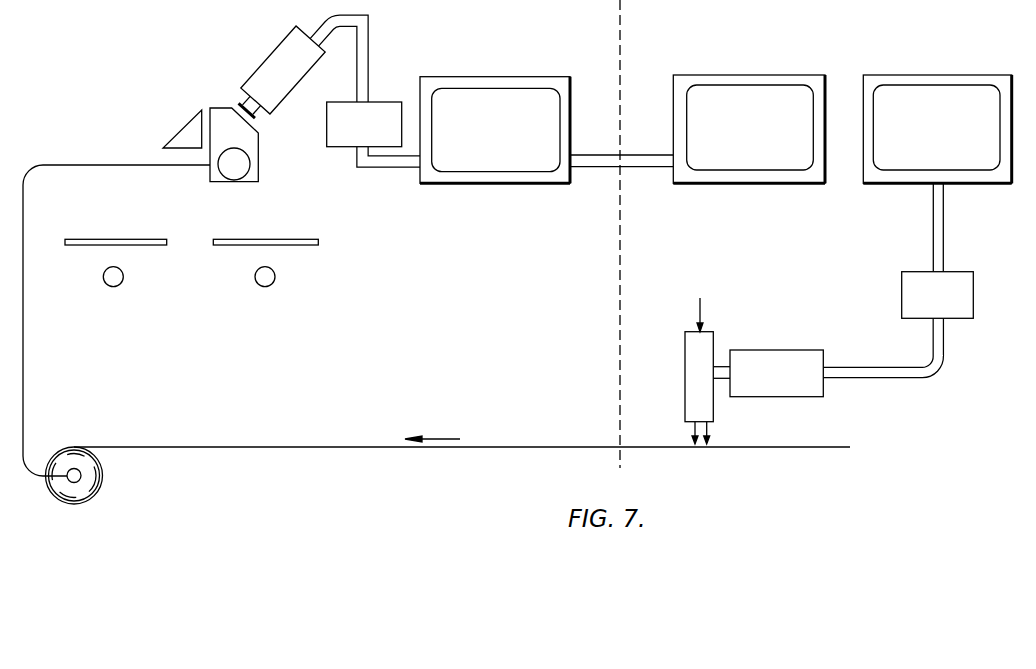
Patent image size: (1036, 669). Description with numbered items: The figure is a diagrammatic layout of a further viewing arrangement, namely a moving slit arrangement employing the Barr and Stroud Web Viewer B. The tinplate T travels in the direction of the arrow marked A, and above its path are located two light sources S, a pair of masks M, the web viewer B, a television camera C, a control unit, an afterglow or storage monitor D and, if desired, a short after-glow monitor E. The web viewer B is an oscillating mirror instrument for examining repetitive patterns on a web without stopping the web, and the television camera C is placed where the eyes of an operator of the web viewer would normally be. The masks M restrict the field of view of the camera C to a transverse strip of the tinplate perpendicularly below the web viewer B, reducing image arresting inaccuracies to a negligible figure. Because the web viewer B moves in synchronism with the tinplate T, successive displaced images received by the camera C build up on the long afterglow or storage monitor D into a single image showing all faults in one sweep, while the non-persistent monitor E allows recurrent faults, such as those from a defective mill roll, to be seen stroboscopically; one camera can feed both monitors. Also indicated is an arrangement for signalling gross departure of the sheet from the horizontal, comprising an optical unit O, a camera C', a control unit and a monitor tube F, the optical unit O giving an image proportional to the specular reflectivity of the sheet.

The television camera C is at (296, 72).
The Barr and Stroud Web Viewer B is at (258, 152).
The afterglow or storage monitor D is at (465, 77).
The short after-glow monitor E is at (723, 75).
The monitor tube F is at (905, 75).
The camera C' is at (768, 357).
The optical unit O is at (685, 345).
The masks M is at (142, 238).
The light sources S is at (103, 275).
The tinplate T is at (347, 445).
The arrow A is at (447, 437).